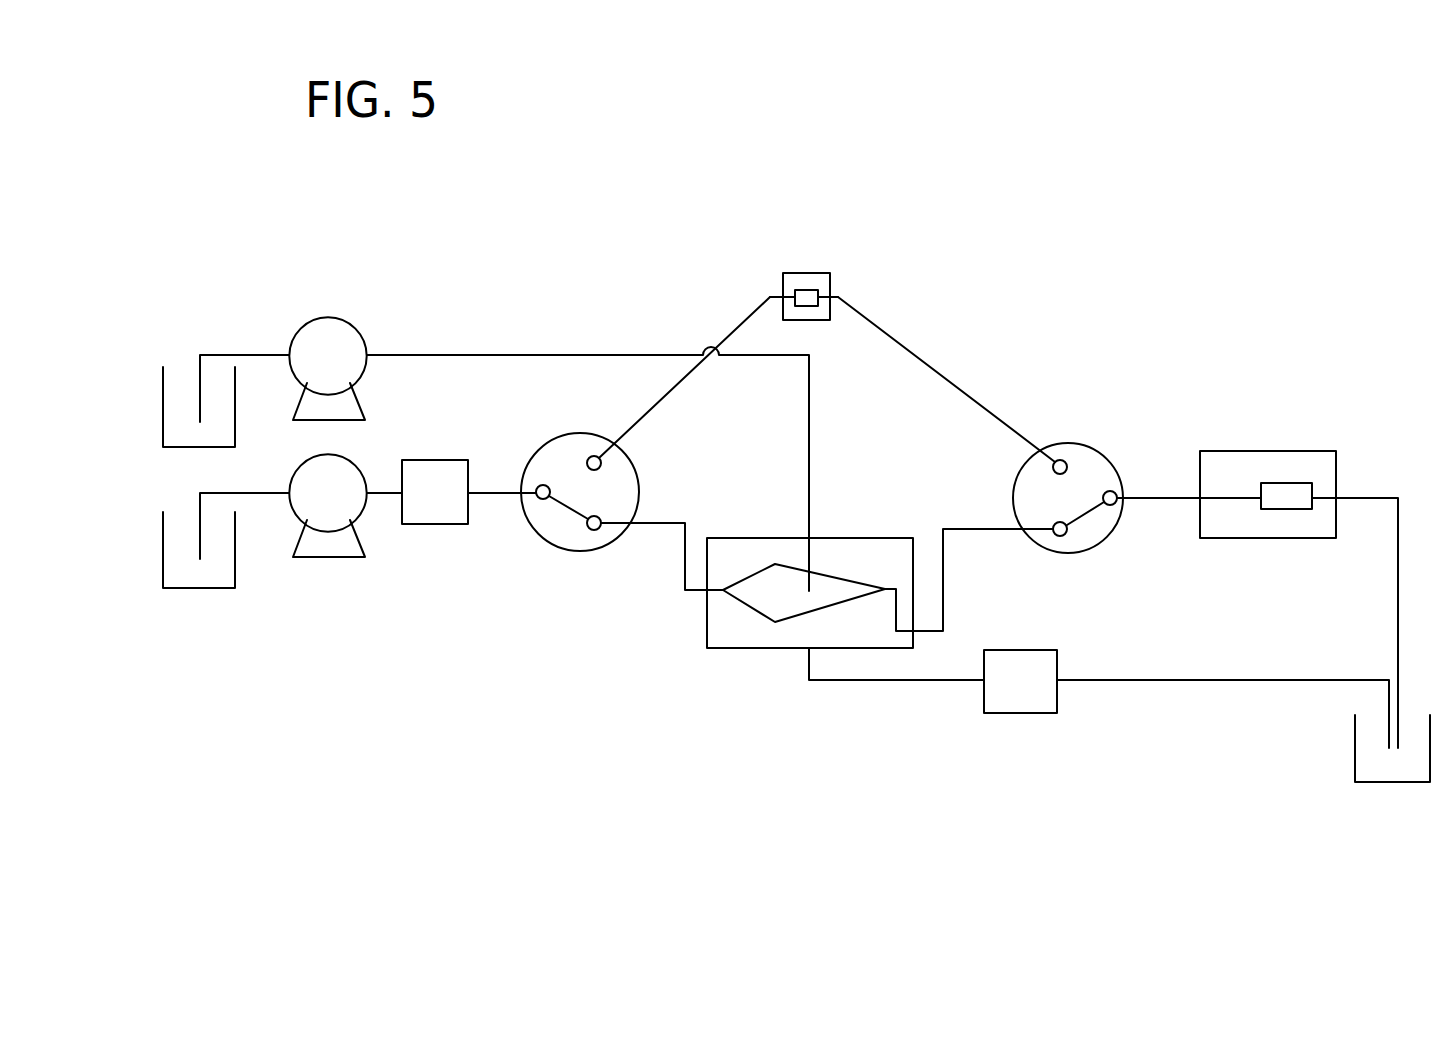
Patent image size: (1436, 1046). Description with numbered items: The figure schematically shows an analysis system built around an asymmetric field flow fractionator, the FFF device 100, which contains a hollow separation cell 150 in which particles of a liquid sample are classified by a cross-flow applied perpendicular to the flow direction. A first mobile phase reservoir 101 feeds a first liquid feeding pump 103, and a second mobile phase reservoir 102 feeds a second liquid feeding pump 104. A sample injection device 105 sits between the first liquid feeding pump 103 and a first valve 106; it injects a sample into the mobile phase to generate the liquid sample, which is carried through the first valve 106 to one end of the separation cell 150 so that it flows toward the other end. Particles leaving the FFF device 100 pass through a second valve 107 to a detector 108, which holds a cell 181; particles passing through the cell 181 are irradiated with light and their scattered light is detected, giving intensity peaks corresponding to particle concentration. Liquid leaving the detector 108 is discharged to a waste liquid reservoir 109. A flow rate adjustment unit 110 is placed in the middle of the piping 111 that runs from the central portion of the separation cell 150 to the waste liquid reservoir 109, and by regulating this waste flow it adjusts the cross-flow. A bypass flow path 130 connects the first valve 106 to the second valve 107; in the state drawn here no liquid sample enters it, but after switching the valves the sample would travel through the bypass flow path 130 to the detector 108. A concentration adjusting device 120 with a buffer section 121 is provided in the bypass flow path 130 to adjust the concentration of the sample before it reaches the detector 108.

The FFF device 100 is at (760, 650).
The first mobile phase reservoir 101 is at (163, 565).
The second mobile phase reservoir 102 is at (163, 415).
The first liquid feeding pump 103 is at (330, 560).
The second liquid feeding pump 104 is at (330, 318).
The sample injection device 105 is at (437, 524).
The first valve 106 is at (575, 550).
The second valve 107 is at (1100, 435).
The detector 108 is at (1269, 451).
The waste liquid reservoir 109 is at (1395, 782).
The flow rate adjustment unit 110 is at (1020, 713).
The piping 111 is at (1216, 681).
The concentration adjusting device 120 is at (823, 273).
The buffer section 121 is at (798, 290).
The bypass flow path 130 is at (942, 373).
The separation cell 150 is at (735, 570).
The cell 181 is at (1290, 509).